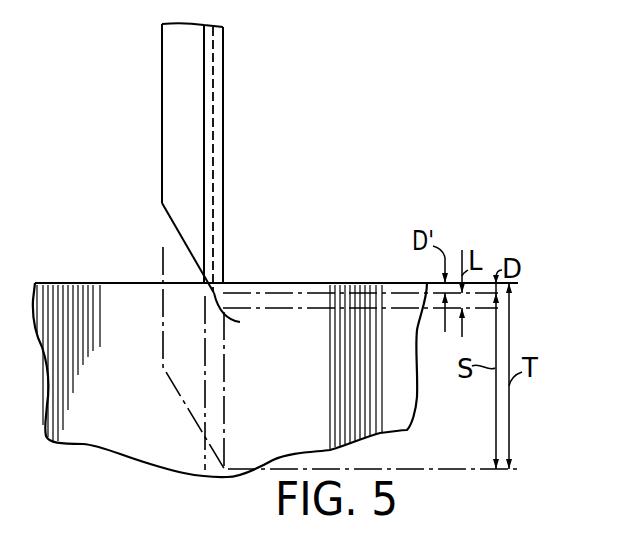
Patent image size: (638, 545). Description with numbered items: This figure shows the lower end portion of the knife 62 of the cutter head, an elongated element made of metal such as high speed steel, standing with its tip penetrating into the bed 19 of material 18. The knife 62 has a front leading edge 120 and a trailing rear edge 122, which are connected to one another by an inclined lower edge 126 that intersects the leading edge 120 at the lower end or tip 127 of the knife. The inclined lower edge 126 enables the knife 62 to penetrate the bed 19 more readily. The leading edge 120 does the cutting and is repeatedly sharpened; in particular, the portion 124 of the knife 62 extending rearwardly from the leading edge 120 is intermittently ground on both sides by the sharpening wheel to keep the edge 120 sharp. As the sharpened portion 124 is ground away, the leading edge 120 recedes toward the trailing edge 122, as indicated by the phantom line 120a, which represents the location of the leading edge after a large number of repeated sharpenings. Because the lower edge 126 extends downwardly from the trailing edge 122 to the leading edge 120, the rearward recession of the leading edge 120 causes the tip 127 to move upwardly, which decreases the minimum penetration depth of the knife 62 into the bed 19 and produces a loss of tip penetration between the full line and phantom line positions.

The workpiece 18 is at (90, 282).
The bed 19 is at (130, 297).
The knife 62 is at (178, 158).
The leading edge 120 is at (224, 97).
The phantom line 120a is at (215, 152).
The trailing rear edge 122 is at (162, 117).
The sharpened portion 124 is at (206, 45).
The inclined lower edge 126 is at (183, 240).
The tip 127 is at (249, 318).